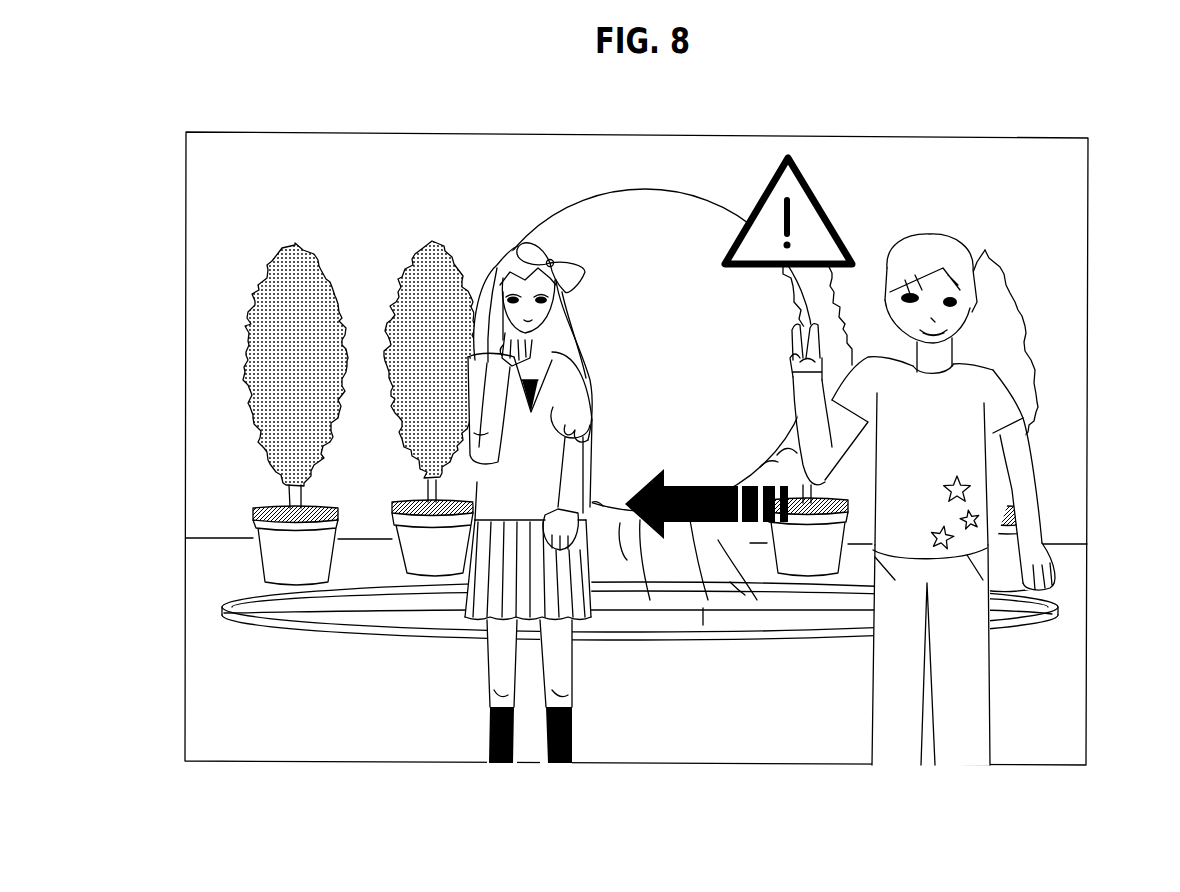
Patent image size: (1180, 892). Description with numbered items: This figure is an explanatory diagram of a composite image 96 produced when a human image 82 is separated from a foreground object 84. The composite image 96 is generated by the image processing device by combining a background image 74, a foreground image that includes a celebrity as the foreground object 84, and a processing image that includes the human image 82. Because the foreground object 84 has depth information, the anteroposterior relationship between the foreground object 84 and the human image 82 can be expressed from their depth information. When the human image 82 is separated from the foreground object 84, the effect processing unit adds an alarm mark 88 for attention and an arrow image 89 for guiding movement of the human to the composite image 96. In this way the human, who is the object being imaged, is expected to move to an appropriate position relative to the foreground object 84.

The composite image 96 is at (187, 110).
The background image 74 is at (636, 440).
The alarm mark 88 is at (805, 170).
The arrow image 89 is at (690, 480).
The foreground object 84 is at (513, 763).
The human image 82 is at (960, 690).